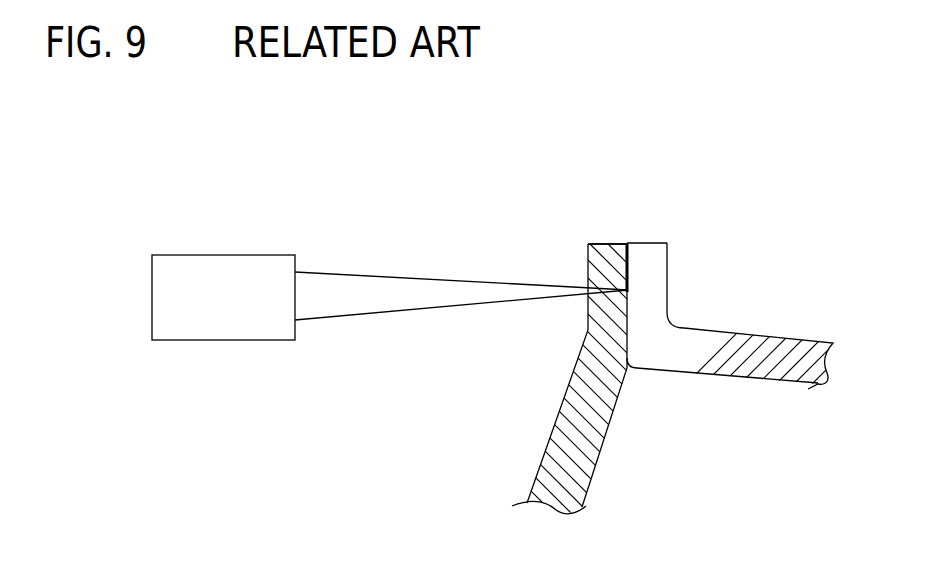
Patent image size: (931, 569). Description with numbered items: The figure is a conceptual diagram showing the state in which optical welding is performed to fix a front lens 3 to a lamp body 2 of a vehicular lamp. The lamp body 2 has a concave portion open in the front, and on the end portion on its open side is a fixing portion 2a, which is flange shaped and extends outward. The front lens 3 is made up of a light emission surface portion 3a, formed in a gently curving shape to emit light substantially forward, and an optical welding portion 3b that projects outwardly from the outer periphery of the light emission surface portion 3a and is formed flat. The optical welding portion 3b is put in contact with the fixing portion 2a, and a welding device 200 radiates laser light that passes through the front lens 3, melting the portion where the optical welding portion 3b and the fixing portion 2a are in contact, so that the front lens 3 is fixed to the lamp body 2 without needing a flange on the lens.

The welding device 200 is at (210, 255).
The lamp body 2 is at (788, 340).
The fixing portion 2a is at (662, 265).
The front lens 3 is at (553, 437).
The light emission surface portion 3a is at (543, 468).
The optical welding portion 3b is at (588, 261).